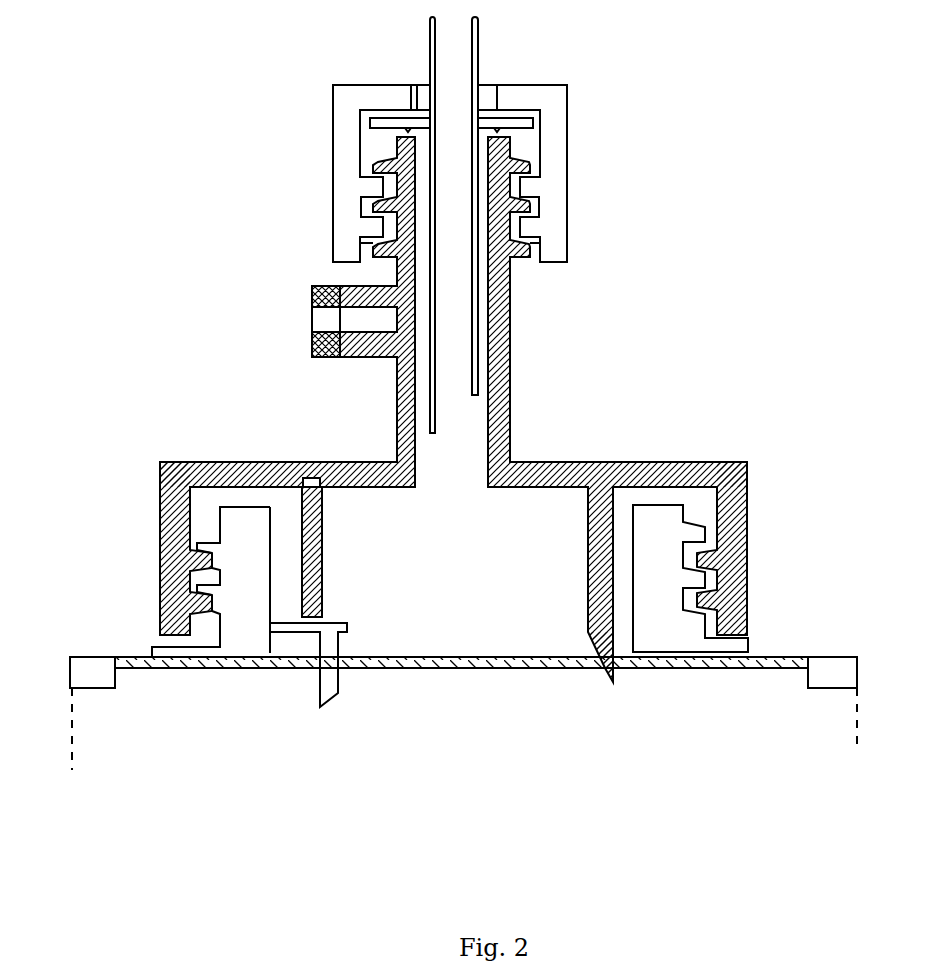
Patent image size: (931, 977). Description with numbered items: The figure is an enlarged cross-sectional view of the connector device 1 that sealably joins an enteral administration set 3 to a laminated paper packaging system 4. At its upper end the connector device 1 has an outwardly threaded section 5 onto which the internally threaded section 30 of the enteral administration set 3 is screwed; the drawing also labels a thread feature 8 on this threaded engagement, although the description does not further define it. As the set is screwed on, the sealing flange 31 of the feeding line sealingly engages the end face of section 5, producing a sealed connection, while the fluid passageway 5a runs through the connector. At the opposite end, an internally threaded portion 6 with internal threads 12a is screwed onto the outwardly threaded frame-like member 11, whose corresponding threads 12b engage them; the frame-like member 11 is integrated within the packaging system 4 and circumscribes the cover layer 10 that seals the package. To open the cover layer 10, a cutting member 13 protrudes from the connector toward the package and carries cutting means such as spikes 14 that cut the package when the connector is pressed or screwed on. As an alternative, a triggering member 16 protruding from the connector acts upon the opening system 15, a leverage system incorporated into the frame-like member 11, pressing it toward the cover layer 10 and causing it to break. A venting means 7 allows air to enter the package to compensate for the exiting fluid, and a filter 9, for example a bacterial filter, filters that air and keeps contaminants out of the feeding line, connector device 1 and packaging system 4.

The connector device 1 is at (525, 421).
The enteral administration set 3 is at (585, 117).
The laminated paper packaging system 4 is at (866, 713).
The outwardly threaded section 5 is at (530, 205).
The fluid passageway 5a is at (500, 557).
The internally threaded portion 6 is at (748, 468).
The venting means 7 is at (300, 343).
The thread 8 is at (530, 163).
The filter 9 is at (318, 320).
The cover layer 10 is at (467, 662).
The frame-like member 11 is at (247, 532).
The internal threads 12a is at (698, 556).
The threads 12b is at (688, 577).
The cutting member 13 is at (614, 658).
The spikes 14 is at (611, 668).
The opening system 15 is at (327, 682).
The triggering member 16 is at (330, 572).
The internally threaded section 30 is at (556, 242).
The sealing flange 31 is at (390, 122).